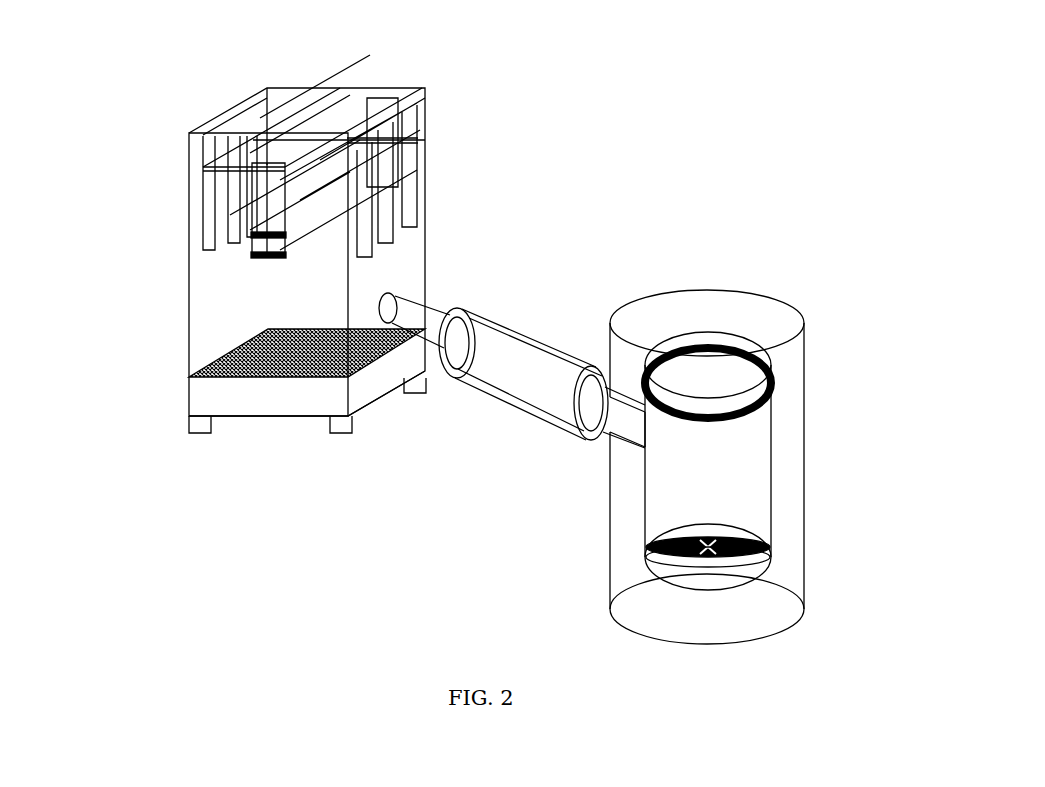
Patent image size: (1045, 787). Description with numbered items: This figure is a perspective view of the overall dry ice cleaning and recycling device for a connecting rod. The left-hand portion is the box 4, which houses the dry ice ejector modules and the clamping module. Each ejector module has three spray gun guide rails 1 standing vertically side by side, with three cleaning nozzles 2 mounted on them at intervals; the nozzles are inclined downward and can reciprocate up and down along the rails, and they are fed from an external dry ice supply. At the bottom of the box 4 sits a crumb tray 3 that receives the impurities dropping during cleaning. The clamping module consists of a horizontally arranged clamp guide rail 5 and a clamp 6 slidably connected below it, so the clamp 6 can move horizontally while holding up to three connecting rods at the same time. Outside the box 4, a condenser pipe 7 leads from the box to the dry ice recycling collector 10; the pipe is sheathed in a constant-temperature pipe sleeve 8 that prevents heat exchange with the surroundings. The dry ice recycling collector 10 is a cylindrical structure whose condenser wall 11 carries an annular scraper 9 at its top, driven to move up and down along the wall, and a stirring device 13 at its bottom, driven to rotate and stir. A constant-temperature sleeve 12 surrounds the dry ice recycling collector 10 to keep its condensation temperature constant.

The spray gun guide rail 1 is at (210, 152).
The cleaning nozzle 2 is at (300, 165).
The crumb tray 3 is at (220, 353).
The box 4 is at (215, 400).
The clamp guide rail 5 is at (325, 98).
The clamp 6 is at (262, 248).
The condenser pipe 7 is at (435, 312).
The constant-temperature pipe sleeve 8 is at (530, 335).
The annular scraper 9 is at (737, 345).
The dry ice recycling collector 10 is at (748, 480).
The condenser wall 11 is at (643, 472).
The constant-temperature sleeve 12 is at (612, 538).
The stirring device 13 is at (645, 565).